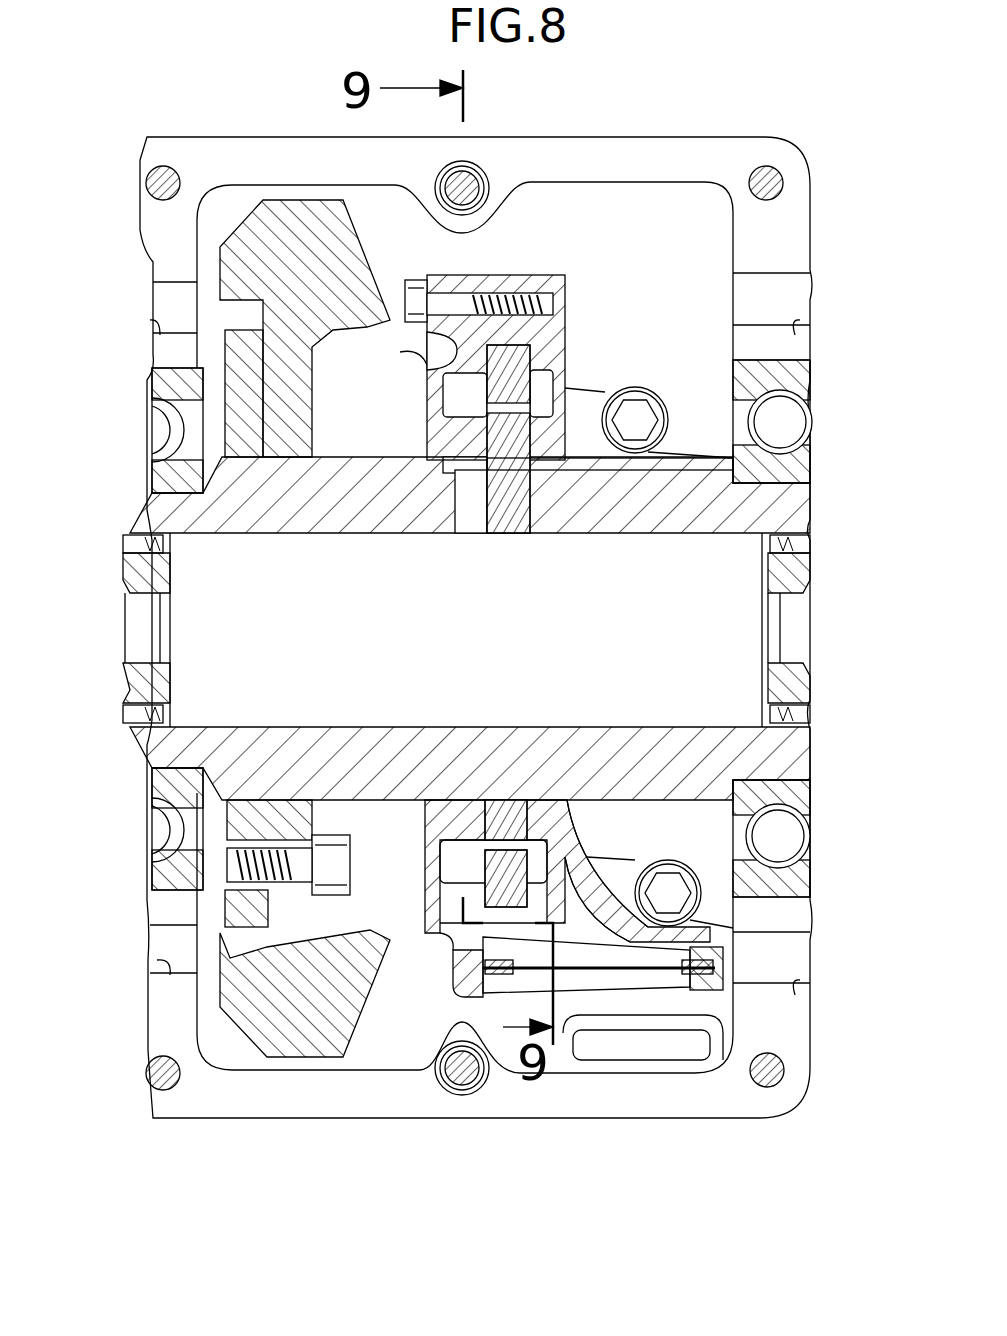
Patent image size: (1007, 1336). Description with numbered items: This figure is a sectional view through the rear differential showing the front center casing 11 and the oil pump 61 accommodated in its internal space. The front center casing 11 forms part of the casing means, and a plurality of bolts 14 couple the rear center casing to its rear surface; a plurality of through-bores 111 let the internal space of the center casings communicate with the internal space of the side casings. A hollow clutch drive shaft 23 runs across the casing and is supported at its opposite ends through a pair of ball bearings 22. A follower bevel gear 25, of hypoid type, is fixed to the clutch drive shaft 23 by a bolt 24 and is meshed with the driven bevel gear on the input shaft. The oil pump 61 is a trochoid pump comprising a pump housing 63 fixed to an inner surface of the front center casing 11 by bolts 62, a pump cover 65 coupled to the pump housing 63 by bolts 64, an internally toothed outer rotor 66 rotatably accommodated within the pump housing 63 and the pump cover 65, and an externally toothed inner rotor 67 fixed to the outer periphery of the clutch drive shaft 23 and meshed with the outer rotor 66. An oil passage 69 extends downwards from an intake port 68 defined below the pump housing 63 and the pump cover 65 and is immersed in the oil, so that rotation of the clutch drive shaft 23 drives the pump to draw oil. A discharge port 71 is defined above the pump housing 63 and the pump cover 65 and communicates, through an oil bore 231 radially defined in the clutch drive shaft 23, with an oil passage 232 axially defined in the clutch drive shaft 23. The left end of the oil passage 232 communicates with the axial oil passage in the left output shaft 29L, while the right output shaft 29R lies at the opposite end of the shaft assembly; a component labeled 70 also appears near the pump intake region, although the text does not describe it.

The front center casing 11 is at (640, 130).
The through-bore 111 is at (840, 982).
The bolt 14 is at (170, 172).
The ball bearing 22 is at (795, 425).
The clutch drive shaft 23 is at (470, 583).
The oil bore 231 is at (470, 512).
The oil passage 232 is at (466, 591).
The bolt 24 is at (390, 943).
The follower bevel gear 25 is at (357, 272).
The left output shaft 29L is at (160, 575).
The right output shaft 29R is at (775, 575).
The oil pump 61 is at (539, 565).
The bolt 62 is at (645, 410).
The pump housing 63 is at (562, 328).
The bolt 64 is at (447, 300).
The pump cover 65 is at (425, 372).
The outer rotor 66 is at (532, 362).
The inner rotor 67 is at (515, 452).
The intake port 68 is at (456, 860).
The oil passage 69 is at (607, 930).
The rod 70 is at (525, 972).
The discharge port 71 is at (456, 400).